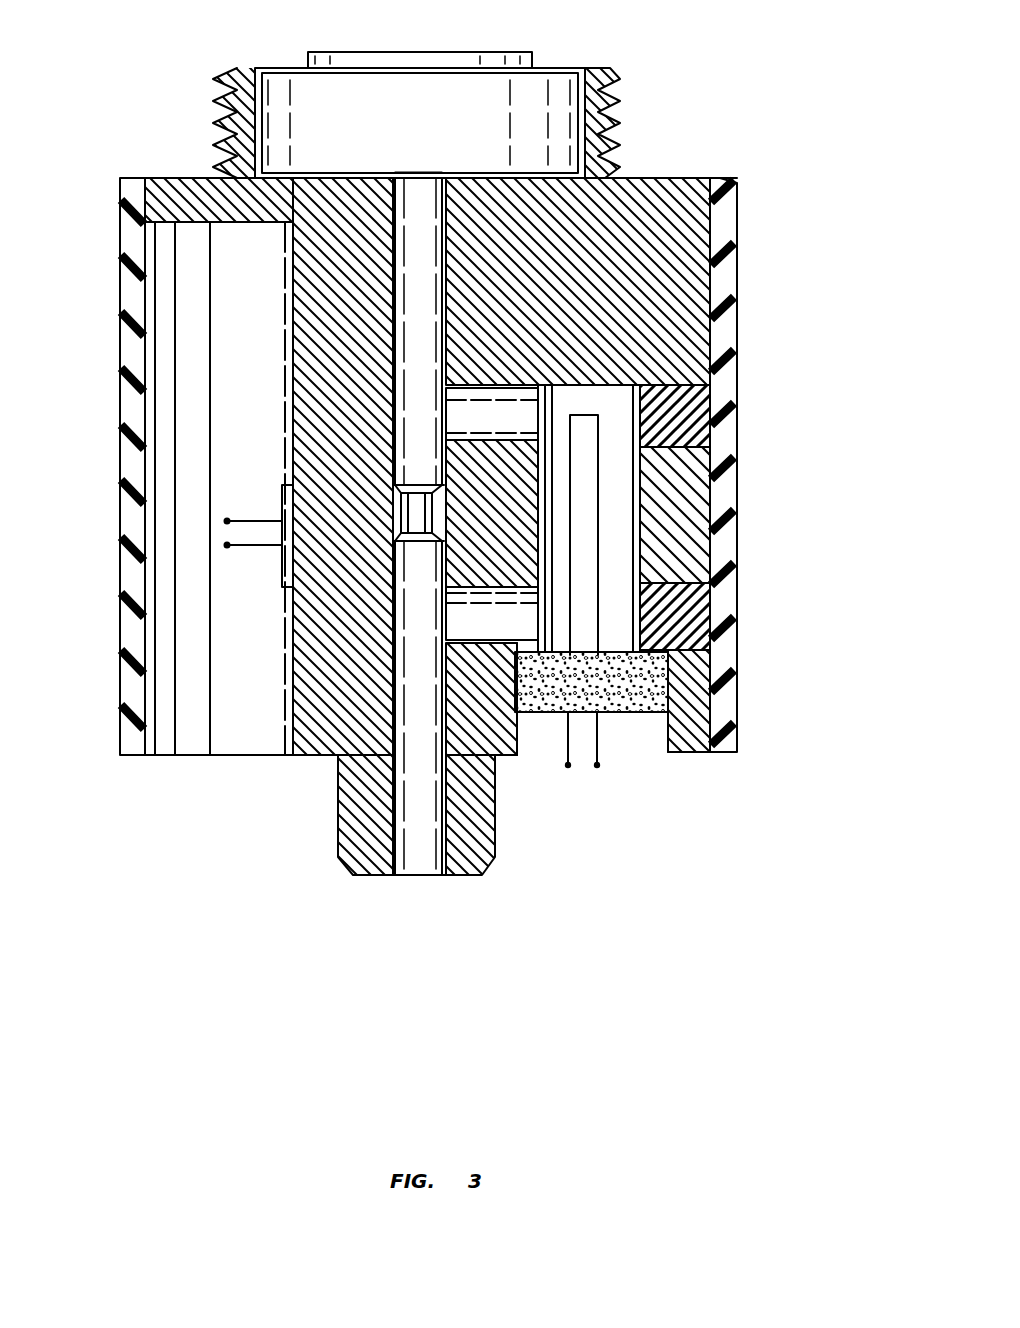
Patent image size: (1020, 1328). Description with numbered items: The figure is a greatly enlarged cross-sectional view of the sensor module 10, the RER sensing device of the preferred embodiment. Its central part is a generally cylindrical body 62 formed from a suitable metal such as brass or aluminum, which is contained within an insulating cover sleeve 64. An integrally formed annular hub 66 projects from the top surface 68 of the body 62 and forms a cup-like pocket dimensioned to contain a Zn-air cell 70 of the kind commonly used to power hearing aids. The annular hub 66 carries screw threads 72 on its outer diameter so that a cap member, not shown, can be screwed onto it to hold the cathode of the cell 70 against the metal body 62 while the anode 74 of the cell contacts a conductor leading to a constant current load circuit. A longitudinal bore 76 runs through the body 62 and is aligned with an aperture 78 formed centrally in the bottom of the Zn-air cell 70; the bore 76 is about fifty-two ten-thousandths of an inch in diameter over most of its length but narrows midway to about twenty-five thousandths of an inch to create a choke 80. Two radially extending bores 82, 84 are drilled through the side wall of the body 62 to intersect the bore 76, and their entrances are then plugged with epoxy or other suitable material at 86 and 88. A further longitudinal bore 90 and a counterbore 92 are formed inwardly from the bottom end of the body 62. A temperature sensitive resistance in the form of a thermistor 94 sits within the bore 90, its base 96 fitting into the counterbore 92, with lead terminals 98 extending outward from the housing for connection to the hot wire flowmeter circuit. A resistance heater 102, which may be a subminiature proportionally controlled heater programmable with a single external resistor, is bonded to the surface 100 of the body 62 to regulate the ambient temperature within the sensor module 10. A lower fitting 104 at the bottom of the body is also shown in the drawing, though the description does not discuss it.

The sensor module 10 is at (783, 297).
The body 62 is at (690, 255).
The insulating cover sleeve 64 is at (712, 497).
The annular hub 66 is at (598, 68).
The top surface 68 is at (665, 178).
The Zn-air cell 70 is at (283, 95).
The screw threads 72 is at (615, 108).
The anode 74 is at (335, 52).
The longitudinal bore 76 is at (408, 855).
The aperture 78 is at (417, 172).
The choke 80 is at (410, 520).
The radially extending bore 82 is at (485, 620).
The radially extending bore 84 is at (490, 410).
The plug 86 is at (695, 412).
The plug 88 is at (687, 613).
The longitudinal bore 90 is at (633, 548).
The counterbore 92 is at (668, 727).
The thermistor 94 is at (583, 415).
The base 96 is at (638, 685).
The lead terminals 98 is at (597, 765).
The surface 100 is at (292, 655).
The resistance heater 102 is at (287, 498).
The lower fitting 104 is at (355, 855).